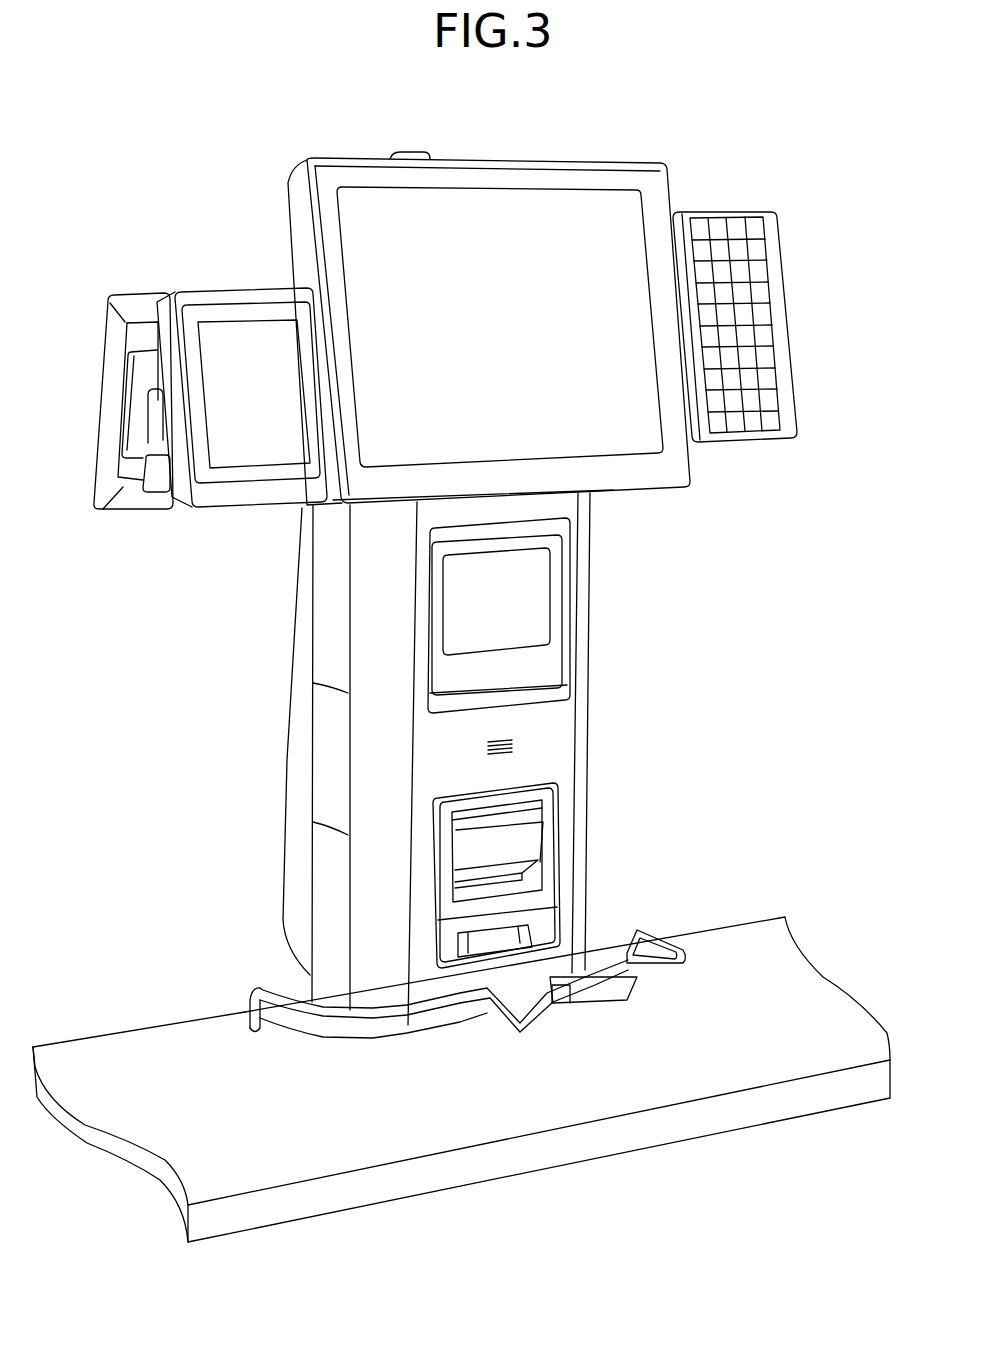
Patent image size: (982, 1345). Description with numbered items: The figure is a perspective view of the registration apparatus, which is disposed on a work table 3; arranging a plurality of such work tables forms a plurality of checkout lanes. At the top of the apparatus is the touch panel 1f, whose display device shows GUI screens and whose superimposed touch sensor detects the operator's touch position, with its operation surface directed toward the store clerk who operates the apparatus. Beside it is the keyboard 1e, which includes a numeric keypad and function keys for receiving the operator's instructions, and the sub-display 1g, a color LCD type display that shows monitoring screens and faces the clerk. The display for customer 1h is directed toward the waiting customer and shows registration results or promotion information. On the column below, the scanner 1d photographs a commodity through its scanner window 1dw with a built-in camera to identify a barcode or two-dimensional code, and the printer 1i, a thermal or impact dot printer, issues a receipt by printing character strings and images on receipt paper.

The touch panel 1f is at (503, 160).
The keyboard 1e is at (730, 208).
The sub-display 1g is at (235, 288).
The display for customer 1h is at (130, 290).
The scanner 1d is at (547, 615).
The scanner window 1dw is at (533, 617).
The printer 1i is at (543, 838).
The work table 3 is at (727, 935).